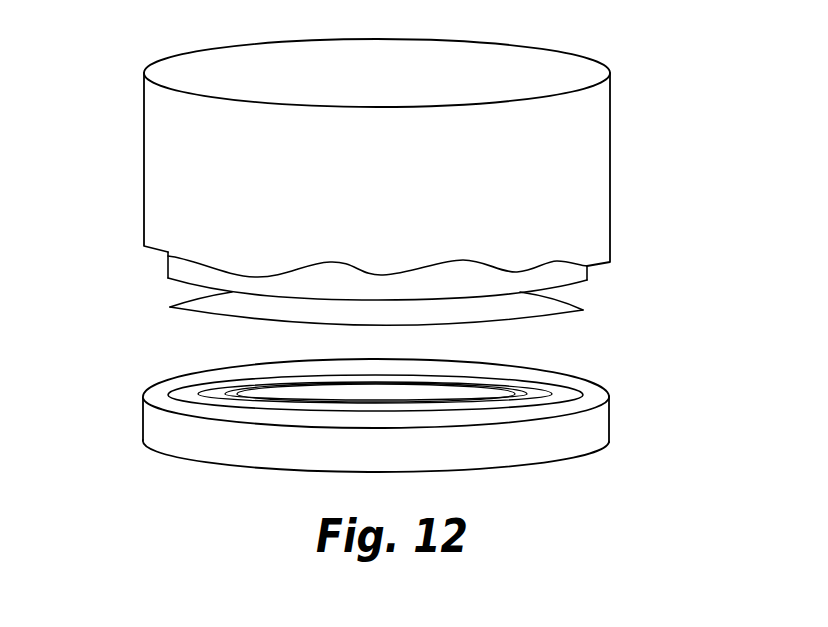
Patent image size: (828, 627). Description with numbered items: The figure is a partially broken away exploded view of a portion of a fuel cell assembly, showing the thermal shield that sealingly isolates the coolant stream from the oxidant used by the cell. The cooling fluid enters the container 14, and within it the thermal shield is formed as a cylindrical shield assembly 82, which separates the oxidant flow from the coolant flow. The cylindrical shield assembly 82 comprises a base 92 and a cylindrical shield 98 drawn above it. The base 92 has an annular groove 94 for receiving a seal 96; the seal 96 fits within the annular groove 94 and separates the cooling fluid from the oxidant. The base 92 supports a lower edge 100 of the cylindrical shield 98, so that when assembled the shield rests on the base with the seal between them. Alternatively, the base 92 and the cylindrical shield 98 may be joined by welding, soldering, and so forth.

The container 14 is at (610, 128).
The cylindrical shield assembly 82 is at (662, 373).
The base 92 is at (609, 423).
The annular groove 94 is at (177, 388).
The seal 96 is at (560, 317).
The cylindrical shield 98 is at (167, 264).
The lower edge 100 is at (177, 283).